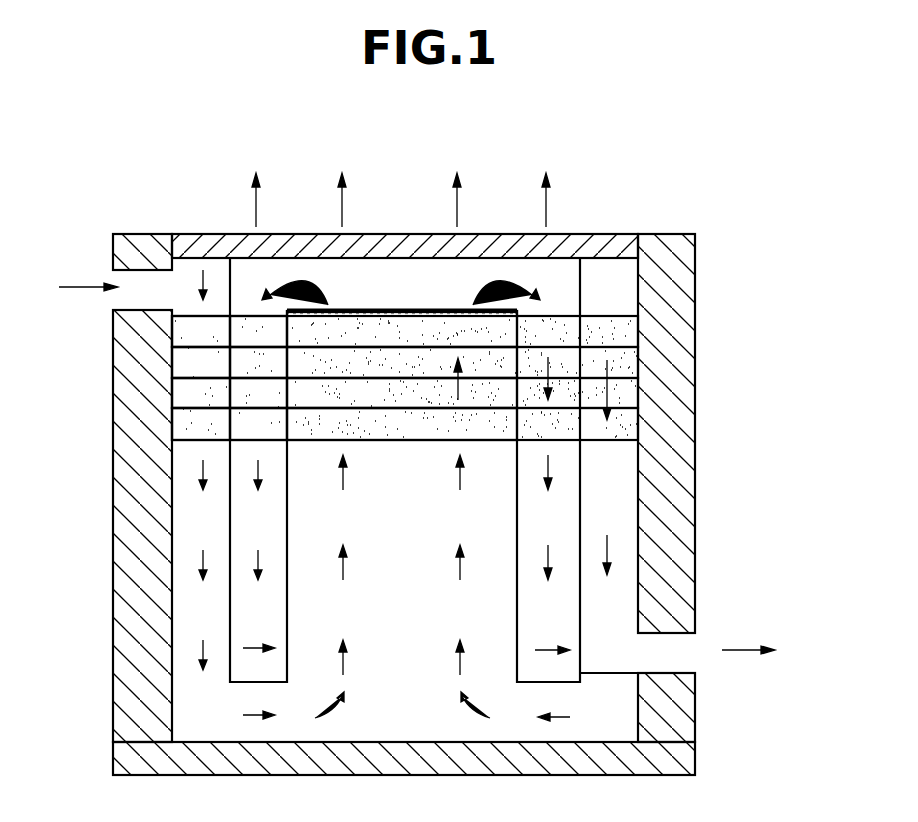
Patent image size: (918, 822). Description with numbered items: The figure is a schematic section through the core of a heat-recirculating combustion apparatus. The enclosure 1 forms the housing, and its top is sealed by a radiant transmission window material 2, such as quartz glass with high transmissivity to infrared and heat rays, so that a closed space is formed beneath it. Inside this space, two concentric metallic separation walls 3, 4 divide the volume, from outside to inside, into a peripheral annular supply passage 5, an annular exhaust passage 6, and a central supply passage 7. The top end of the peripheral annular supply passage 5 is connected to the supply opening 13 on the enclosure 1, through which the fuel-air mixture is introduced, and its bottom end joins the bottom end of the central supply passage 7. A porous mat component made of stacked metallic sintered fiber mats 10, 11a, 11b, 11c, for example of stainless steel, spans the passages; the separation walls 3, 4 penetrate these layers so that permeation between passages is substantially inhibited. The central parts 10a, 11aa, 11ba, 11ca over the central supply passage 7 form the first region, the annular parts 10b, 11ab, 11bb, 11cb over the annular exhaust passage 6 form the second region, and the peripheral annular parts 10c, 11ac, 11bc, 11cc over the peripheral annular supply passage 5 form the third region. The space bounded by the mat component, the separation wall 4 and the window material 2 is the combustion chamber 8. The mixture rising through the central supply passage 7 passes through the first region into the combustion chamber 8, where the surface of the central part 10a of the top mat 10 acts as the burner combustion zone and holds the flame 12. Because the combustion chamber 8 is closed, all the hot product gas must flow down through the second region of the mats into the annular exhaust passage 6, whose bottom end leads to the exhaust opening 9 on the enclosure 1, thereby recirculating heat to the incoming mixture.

The enclosure 1 is at (697, 546).
The radiant transmission window material 2 is at (507, 237).
The metallic separation wall 3 is at (517, 580).
The metallic separation wall 4 is at (230, 612).
The peripheral annular supply passage 5 is at (185, 488).
The annular exhaust passage 6 is at (275, 522).
The central supply passage 7 is at (392, 580).
The combustion chamber 8 is at (345, 272).
The exhaust opening 9 is at (680, 678).
The metallic sintered fiber mat 10 is at (457, 315).
The central part of metallic sintered fiber mat 10a is at (402, 329).
The annular part of metallic sintered fiber mat 10b is at (258, 331).
The peripheral annular part of metallic sintered fiber mat 10c is at (201, 331).
The metallic sintered fiber mat 11a is at (347, 370).
The central part of metallic sintered fiber mat 11aa is at (402, 362).
The annular part of metallic sintered fiber mat 11ab is at (258, 362).
The peripheral annular part of metallic sintered fiber mat 11ac is at (201, 362).
The metallic sintered fiber mat 11b is at (347, 408).
The central part of metallic sintered fiber mat 11ba is at (402, 393).
The annular part of metallic sintered fiber mat 11bb is at (258, 393).
The peripheral annular part of metallic sintered fiber mat 11bc is at (201, 393).
The metallic sintered fiber mat 11c is at (348, 451).
The central part of metallic sintered fiber mat 11ca is at (402, 424).
The annular part of metallic sintered fiber mat 11cb is at (258, 424).
The peripheral annular part of metallic sintered fiber mat 11cc is at (201, 424).
The flame 12 is at (412, 310).
The supply opening 13 is at (150, 310).